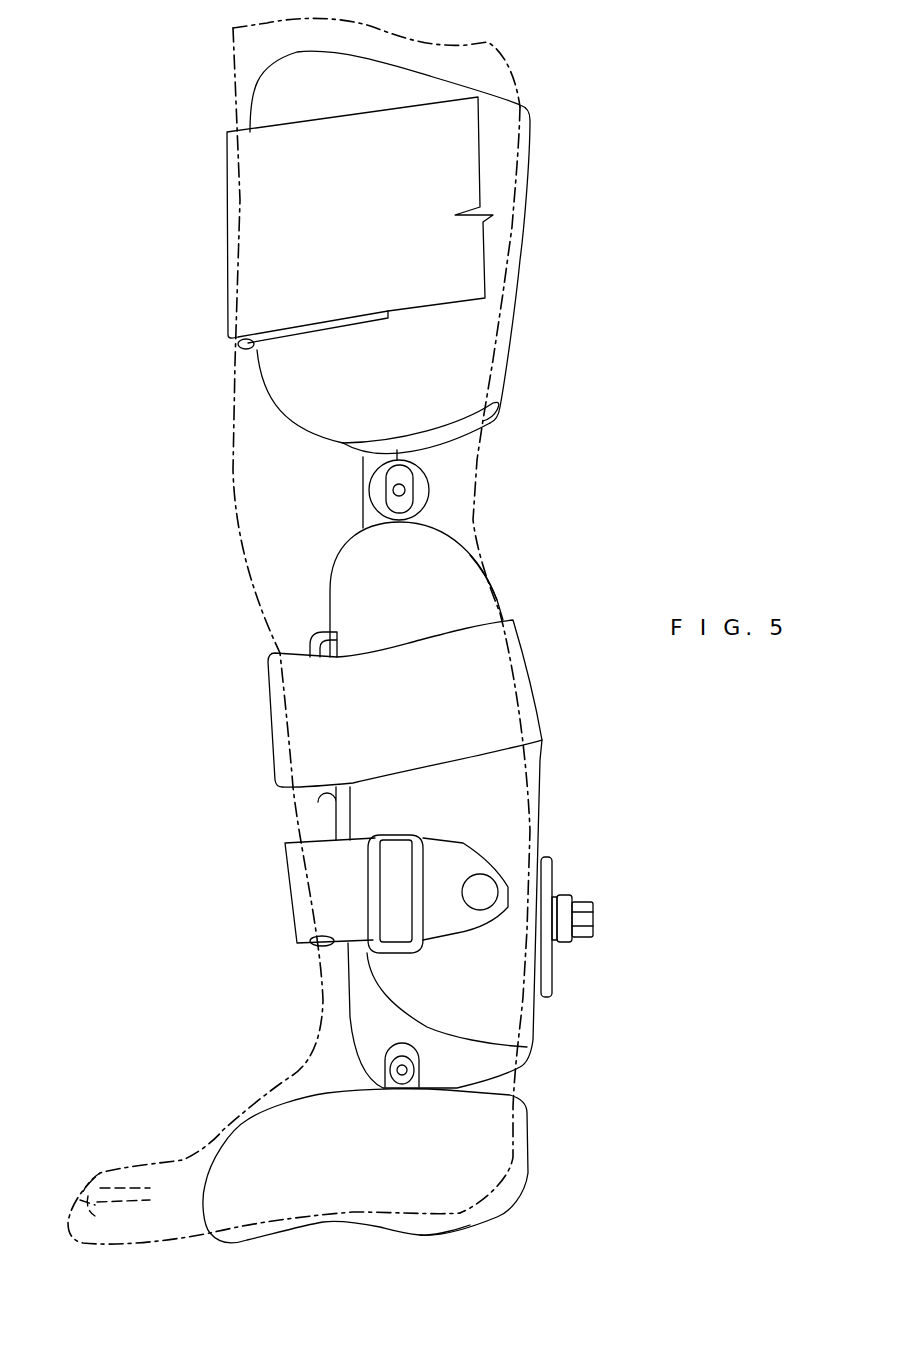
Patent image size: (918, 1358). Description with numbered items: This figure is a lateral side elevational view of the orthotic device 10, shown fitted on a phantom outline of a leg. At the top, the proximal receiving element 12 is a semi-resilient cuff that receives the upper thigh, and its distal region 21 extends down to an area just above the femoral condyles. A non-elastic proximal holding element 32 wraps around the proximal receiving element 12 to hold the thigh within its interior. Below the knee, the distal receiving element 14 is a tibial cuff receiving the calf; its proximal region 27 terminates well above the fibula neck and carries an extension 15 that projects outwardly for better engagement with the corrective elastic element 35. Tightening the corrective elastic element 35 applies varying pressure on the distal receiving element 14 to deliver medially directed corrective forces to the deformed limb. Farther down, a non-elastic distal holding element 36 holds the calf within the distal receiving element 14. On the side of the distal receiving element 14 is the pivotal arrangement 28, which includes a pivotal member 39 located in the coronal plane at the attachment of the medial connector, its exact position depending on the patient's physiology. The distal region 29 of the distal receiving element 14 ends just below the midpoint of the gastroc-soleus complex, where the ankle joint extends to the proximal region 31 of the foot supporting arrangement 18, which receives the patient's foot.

The orthotic device 10 is at (515, 507).
The proximal receiving element 12 is at (507, 315).
The distal receiving element 14 is at (477, 778).
The extension 15 is at (358, 573).
The foot supporting arrangement 18 is at (500, 1203).
The distal region of the proximal receiving element 21 is at (357, 423).
The proximal region of the distal receiving element 27 is at (453, 603).
The pivotal arrangement 28 is at (578, 879).
The distal region of the distal receiving element 29 is at (463, 1070).
The proximal region of the foot supporting element 31 is at (370, 1103).
The proximal holding element 32 is at (267, 252).
The corrective elastic element 35 is at (302, 727).
The distal holding element 36 is at (298, 908).
The pivotal member 39 is at (582, 918).